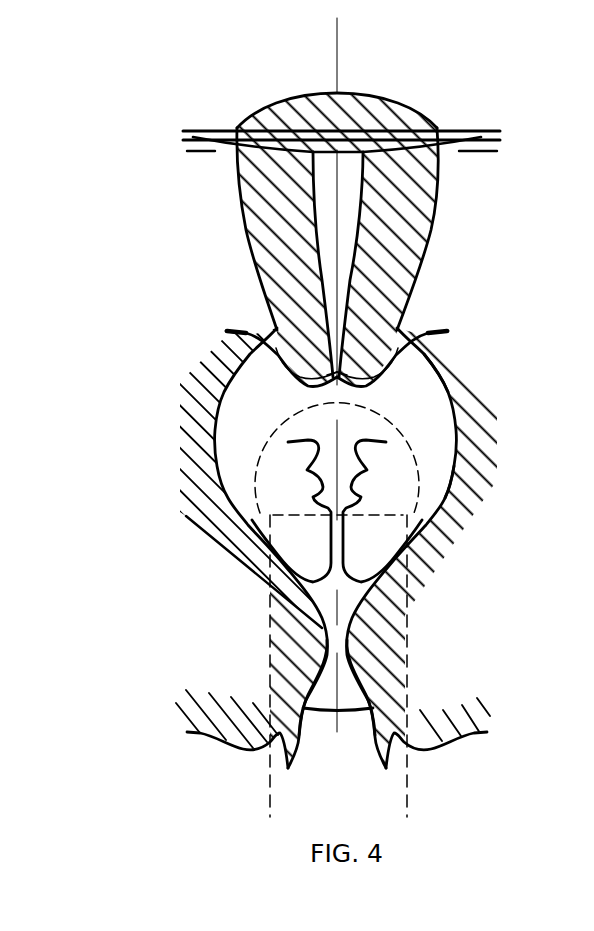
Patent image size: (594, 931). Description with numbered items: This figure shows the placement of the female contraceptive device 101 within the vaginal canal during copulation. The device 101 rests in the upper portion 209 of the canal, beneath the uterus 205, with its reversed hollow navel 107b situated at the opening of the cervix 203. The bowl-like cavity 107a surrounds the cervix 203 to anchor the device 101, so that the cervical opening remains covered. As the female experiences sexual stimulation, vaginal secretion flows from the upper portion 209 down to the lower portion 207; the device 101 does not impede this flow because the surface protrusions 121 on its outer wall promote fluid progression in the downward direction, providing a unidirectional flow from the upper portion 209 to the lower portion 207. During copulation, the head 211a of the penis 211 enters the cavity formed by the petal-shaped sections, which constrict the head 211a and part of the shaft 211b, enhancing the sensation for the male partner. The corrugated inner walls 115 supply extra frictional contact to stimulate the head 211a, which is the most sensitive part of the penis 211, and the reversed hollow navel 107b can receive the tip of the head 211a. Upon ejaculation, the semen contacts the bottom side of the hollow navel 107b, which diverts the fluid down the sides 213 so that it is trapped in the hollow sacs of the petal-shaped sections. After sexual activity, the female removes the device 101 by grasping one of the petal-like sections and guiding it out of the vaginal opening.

The uterus 205 is at (276, 238).
The cervix 203 is at (270, 305).
The bowl-like cavity 107a is at (398, 380).
The reversed hollow navel 107b is at (343, 377).
The surface protrusions 121 is at (447, 387).
The upper portion of the vaginal canal 209 is at (463, 423).
The female contraceptive device 101 is at (217, 448).
The sides 213 is at (270, 444).
The corrugated inner wall 115 is at (312, 445).
The head of the penis 211a is at (420, 487).
The shaft of the penis 211b is at (258, 598).
The penis 211 is at (265, 650).
The lower portion of the vaginal canal 207 is at (352, 647).